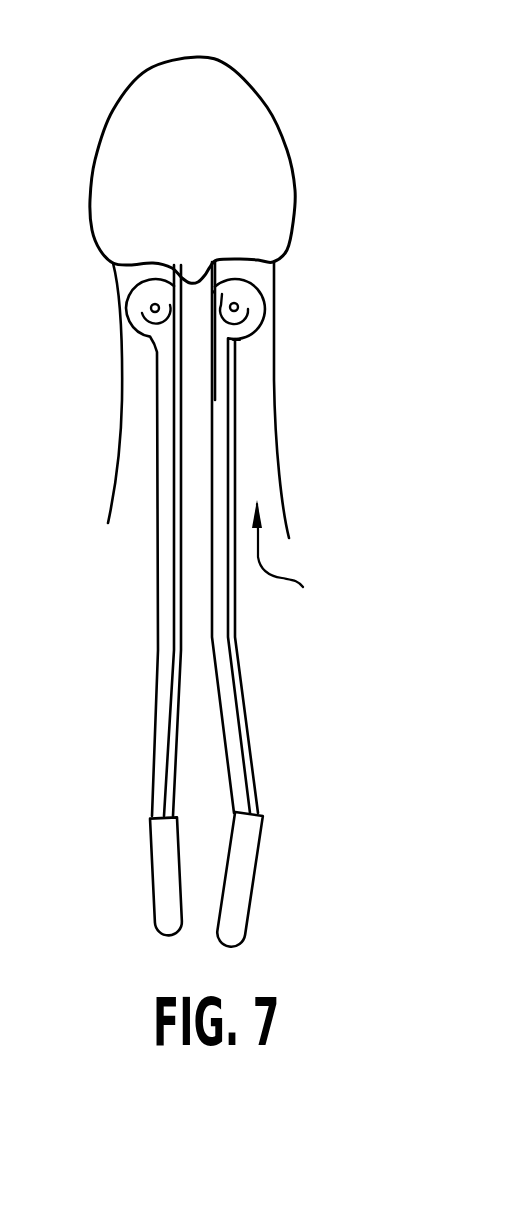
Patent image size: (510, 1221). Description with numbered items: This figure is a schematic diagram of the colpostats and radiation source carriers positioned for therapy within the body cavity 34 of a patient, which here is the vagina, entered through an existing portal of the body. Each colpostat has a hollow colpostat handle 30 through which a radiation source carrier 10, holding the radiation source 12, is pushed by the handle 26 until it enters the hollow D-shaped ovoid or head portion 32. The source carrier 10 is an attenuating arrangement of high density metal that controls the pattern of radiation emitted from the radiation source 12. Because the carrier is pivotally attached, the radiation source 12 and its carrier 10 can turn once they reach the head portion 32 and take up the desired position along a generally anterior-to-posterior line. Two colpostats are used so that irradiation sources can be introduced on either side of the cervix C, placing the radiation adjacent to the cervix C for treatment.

The radiation source carrier 10 is at (262, 332).
The radiation source 12 is at (243, 299).
The handle 26 is at (240, 340).
The colpostat handle 30 is at (237, 618).
The head portion 32 is at (133, 313).
The body cavity 34 is at (300, 554).
The cervix C is at (212, 294).